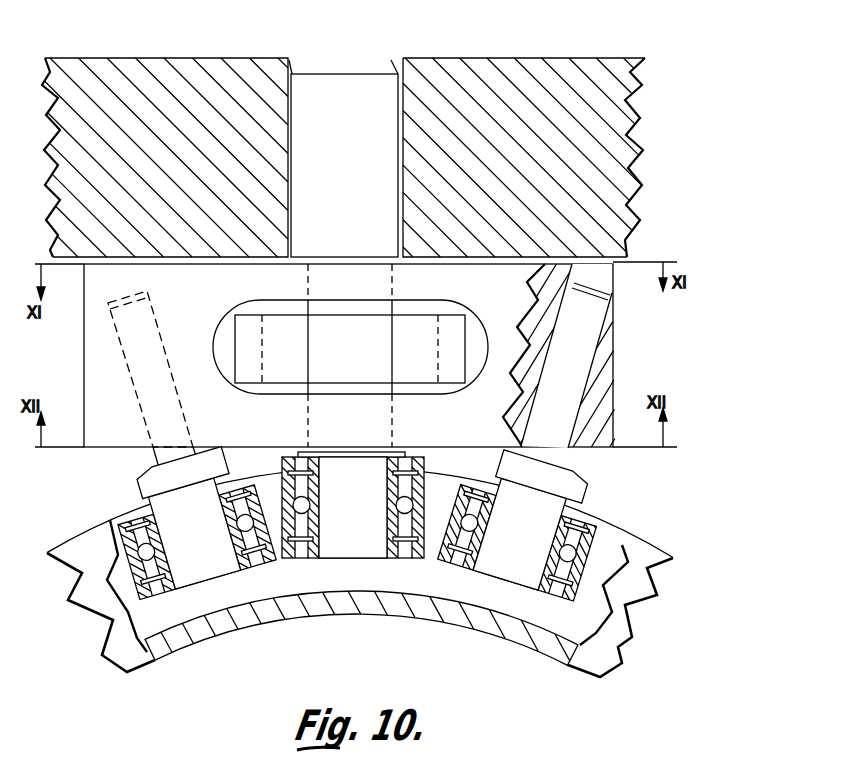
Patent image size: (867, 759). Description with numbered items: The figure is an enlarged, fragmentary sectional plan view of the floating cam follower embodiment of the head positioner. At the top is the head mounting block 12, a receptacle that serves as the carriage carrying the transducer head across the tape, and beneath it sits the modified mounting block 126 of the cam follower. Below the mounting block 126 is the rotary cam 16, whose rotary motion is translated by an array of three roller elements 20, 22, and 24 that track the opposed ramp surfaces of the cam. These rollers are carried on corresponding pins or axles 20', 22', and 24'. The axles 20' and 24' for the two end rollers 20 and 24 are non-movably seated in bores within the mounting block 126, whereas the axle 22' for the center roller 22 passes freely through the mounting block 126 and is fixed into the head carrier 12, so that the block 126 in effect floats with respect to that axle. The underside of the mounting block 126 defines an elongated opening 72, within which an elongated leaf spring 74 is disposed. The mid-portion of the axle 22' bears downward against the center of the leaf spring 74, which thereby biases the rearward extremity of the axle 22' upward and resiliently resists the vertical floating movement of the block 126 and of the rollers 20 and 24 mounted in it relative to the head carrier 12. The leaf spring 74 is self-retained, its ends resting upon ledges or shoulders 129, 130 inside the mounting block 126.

The head mounting block 12 is at (343, 133).
The rotary cam 16 is at (360, 601).
The roller element 20 is at (161, 593).
The mounting pin 20' is at (148, 483).
The center roller 22 is at (353, 564).
The mounting pin 22' is at (344, 367).
The roller element 24 is at (555, 581).
The mounting pin 24' is at (565, 470).
The elongated opening 72 is at (414, 306).
The leaf spring 74 is at (298, 358).
The mounting block 126 is at (604, 368).
The ledge 129 is at (219, 334).
The ledge 130 is at (474, 331).